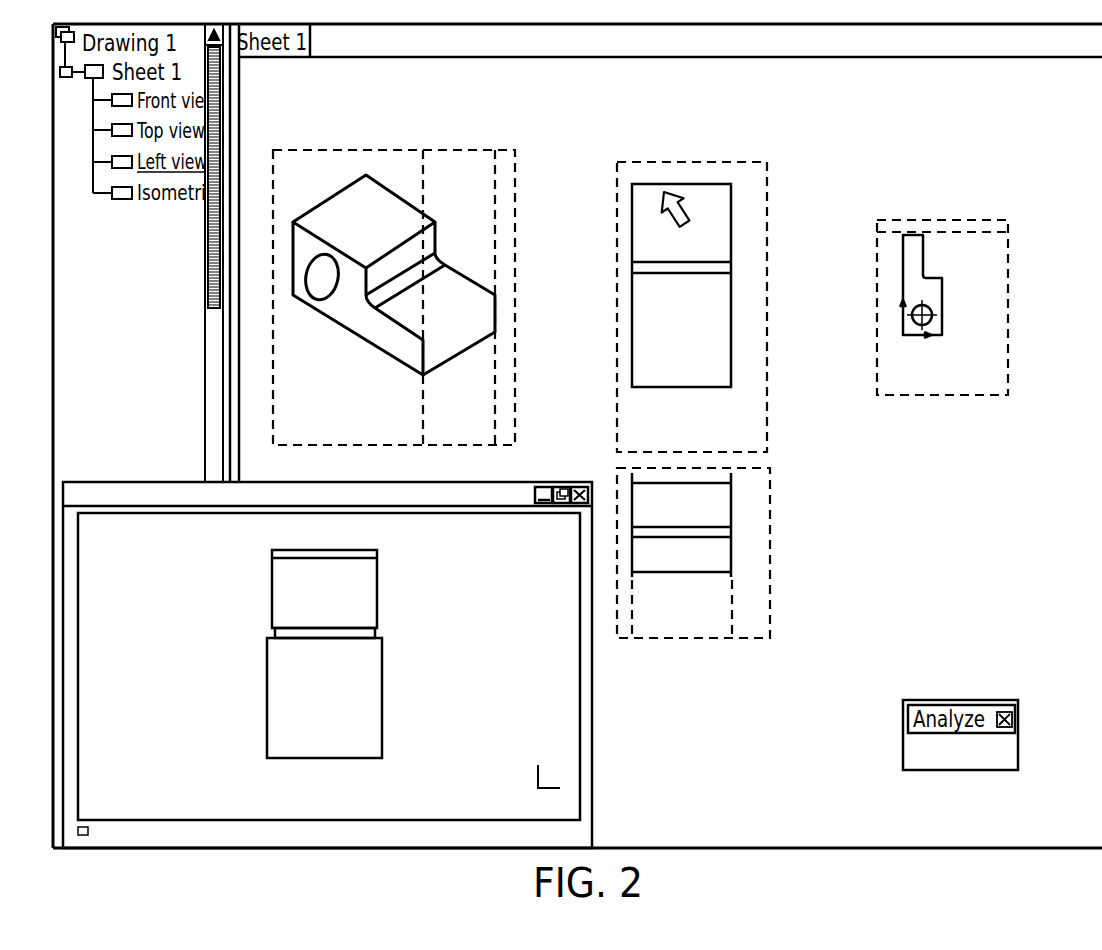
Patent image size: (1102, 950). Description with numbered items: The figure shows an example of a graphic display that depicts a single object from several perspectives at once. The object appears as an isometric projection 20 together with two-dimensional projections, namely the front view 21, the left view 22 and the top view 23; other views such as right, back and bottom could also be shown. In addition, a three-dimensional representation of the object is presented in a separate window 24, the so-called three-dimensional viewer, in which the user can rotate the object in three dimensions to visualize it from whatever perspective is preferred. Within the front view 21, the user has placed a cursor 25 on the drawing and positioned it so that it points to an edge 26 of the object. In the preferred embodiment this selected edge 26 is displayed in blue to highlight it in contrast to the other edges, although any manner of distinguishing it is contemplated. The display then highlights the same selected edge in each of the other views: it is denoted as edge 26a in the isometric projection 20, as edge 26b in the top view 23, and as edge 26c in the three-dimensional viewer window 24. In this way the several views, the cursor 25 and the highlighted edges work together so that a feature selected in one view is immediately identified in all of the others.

The isometric projection 20 is at (358, 116).
The front view 21 is at (650, 128).
The left view 22 is at (1070, 316).
The top view 23 is at (817, 566).
The 3D viewer window 24 is at (596, 753).
The cursor 25 is at (684, 207).
The edge 26 is at (706, 180).
The edge in the isometric view 26a is at (466, 307).
The edge in the top view 26b is at (708, 524).
The edge in the 3D viewer 26c is at (334, 560).